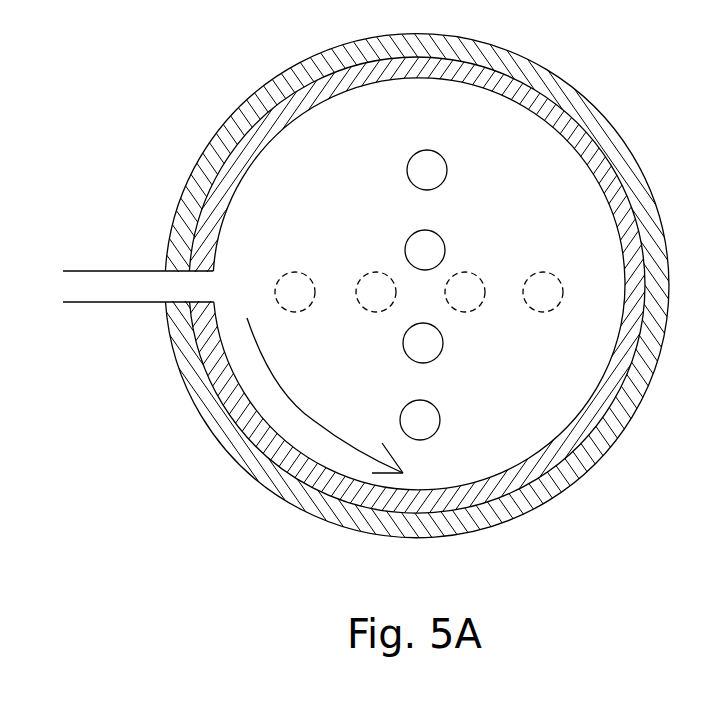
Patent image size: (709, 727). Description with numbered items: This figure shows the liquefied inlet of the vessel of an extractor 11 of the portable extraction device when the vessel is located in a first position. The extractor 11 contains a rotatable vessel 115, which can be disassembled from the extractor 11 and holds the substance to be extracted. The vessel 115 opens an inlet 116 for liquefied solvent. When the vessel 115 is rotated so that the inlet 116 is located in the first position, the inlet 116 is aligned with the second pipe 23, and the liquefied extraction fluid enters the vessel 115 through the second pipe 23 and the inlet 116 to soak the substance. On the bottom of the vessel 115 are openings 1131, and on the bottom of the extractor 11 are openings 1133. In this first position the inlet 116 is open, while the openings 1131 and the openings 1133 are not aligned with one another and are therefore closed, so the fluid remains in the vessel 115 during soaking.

The extractor 11 is at (598, 128).
The vessel 115 is at (552, 92).
The inlet 116 is at (202, 297).
The second pipe 23 is at (112, 290).
The openings 1131 is at (427, 250).
The openings 1133 is at (467, 292).